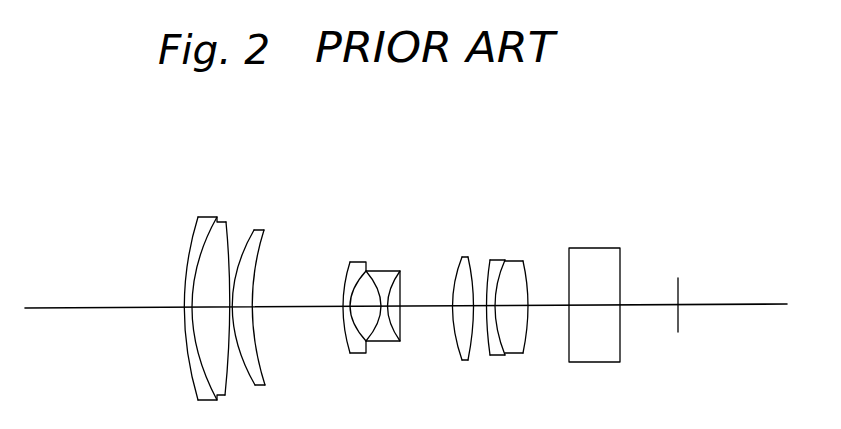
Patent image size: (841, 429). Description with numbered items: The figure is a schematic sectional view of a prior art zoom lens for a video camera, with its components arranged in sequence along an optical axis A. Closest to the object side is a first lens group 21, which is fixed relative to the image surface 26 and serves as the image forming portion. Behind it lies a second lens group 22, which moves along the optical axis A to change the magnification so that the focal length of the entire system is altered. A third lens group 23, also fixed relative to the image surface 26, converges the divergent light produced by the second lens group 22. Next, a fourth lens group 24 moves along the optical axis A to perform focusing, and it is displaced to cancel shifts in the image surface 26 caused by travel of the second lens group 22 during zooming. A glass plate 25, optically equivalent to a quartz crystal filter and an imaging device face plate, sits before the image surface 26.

The first lens group 21 is at (277, 197).
The second lens group 22 is at (412, 225).
The third lens group 23 is at (488, 223).
The fourth lens group 24 is at (537, 223).
The glass plate 25 is at (628, 225).
The image surface 26 is at (678, 272).
The optical axis A is at (763, 304).